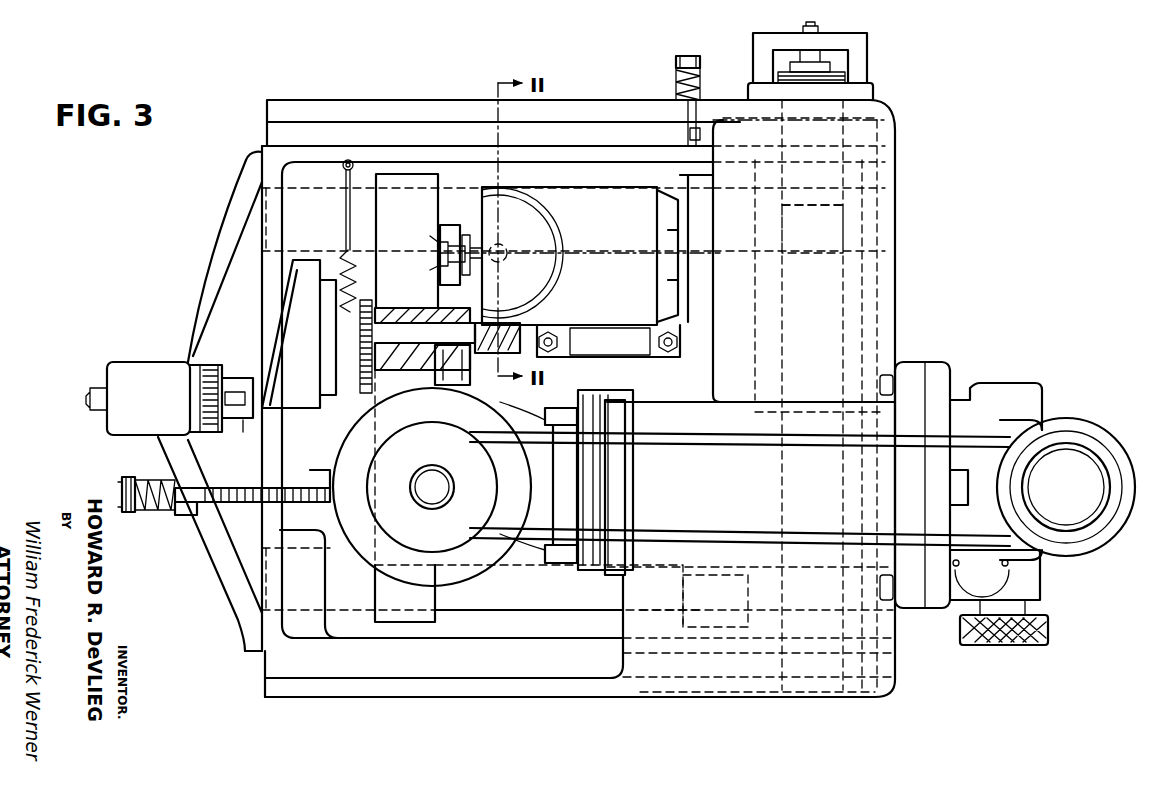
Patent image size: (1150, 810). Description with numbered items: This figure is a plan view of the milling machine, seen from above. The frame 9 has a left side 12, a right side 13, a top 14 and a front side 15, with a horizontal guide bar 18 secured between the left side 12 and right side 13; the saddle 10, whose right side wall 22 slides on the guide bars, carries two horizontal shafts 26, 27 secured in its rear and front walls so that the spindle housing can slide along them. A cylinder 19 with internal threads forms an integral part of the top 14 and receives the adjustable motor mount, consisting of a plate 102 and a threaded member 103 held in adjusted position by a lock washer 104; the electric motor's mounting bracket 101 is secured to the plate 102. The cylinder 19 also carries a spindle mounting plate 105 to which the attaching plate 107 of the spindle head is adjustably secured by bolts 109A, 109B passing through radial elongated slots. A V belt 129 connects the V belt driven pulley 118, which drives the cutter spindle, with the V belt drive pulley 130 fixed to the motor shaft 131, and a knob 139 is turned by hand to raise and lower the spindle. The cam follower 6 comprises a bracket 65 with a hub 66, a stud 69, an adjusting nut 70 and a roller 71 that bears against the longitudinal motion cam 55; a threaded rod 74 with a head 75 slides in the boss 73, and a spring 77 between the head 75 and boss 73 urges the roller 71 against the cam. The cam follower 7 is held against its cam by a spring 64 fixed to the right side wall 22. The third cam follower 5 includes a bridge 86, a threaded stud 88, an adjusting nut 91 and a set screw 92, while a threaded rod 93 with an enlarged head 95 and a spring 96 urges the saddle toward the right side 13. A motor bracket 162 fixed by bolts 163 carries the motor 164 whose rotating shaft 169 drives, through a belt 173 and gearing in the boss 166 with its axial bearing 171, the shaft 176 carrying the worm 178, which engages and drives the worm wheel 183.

The third cam follower 5 is at (850, 30).
The cam follower 6 is at (243, 422).
The cam follower 7 is at (330, 408).
The frame 9 is at (590, 703).
The saddle 10 is at (243, 656).
The left side 12 is at (455, 690).
The right side 13 is at (300, 118).
The top 14 is at (812, 250).
The front side 15 is at (896, 244).
The horizontal guide bar 18 is at (768, 700).
The cylinder 19 is at (750, 449).
The right side wall 22 is at (568, 152).
The horizontal shaft 26 is at (670, 190).
The horizontal shaft 27 is at (512, 598).
The longitudinal motion cam 55 is at (291, 334).
The spring 64 is at (348, 234).
The bracket 65 is at (220, 248).
The hub 66 is at (108, 365).
The stud 69 is at (100, 385).
The adjusting nut 70 is at (210, 365).
The roller 71 is at (246, 380).
The boss 73 is at (195, 516).
The threaded rod 74 is at (246, 500).
The head 75 is at (120, 482).
The spring 77 is at (160, 512).
The bridge 86 is at (752, 42).
The threaded stud 88 is at (832, 65).
The adjusting nut 91 is at (846, 76).
The set screw 92 is at (810, 24).
The threaded rod 93 is at (688, 135).
The enlarged head 95 is at (688, 56).
The spring 96 is at (700, 88).
The mounting bracket 101 is at (545, 410).
The plate 102 is at (592, 418).
The threaded member 103 is at (608, 495).
The lock washer 104 is at (622, 402).
The spindle mounting plate 105 is at (915, 602).
The attaching plate 107 is at (948, 382).
The bolt 109A is at (893, 602).
The bolt 109B is at (898, 372).
The V belt driven pulley 118 is at (1083, 545).
The V belt 129 is at (690, 442).
The V belt drive pulley 130 is at (432, 487).
The shaft 131 is at (425, 497).
The knob 139 is at (998, 640).
The motor bracket 162 is at (608, 341).
The bolt 163 is at (552, 352).
The motor 164 is at (555, 256).
The boss 166 is at (431, 365).
The rotating shaft 169 is at (438, 250).
The axial bearing 171 is at (392, 306).
The belt 173 is at (440, 240).
The shaft 176 is at (425, 339).
The worm 178 is at (508, 325).
The worm wheel 183 is at (565, 266).